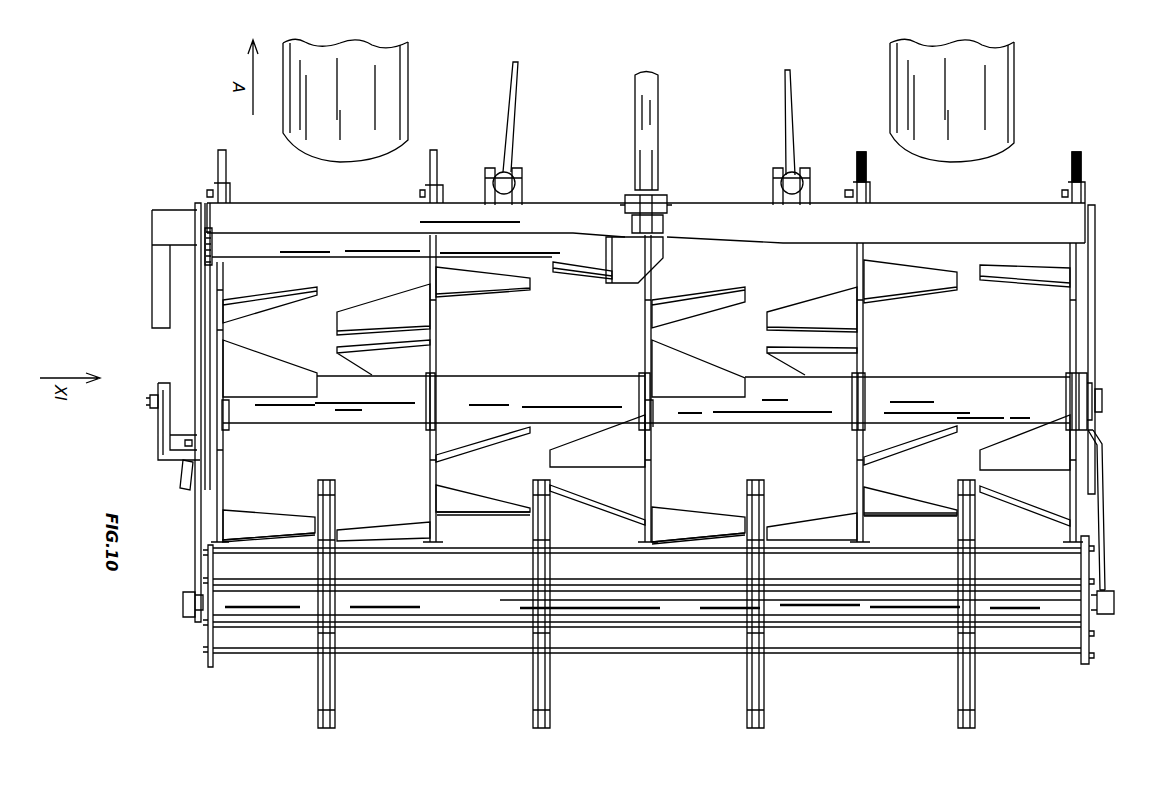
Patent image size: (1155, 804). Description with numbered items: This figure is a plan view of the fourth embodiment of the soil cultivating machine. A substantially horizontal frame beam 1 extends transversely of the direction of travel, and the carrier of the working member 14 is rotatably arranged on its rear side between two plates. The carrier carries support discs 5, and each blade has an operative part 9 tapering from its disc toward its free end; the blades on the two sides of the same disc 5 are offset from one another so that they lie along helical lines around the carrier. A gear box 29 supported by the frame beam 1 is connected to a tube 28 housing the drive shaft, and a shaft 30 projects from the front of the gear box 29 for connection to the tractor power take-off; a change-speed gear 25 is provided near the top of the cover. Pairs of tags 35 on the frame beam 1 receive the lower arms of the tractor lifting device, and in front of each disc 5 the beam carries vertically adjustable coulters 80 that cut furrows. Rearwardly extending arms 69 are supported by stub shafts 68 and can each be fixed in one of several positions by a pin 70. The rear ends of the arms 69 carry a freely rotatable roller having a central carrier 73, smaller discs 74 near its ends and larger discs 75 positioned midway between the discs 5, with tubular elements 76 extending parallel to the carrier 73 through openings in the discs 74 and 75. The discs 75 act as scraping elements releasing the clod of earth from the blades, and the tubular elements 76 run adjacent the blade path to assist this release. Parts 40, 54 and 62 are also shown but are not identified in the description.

The frame beam 1 is at (278, 206).
The support disc 5 is at (280, 297).
The operative part 9 is at (358, 312).
The working member 14 is at (601, 299).
The change-speed gear 25 is at (157, 273).
The tube 28 is at (380, 240).
The gear box 29 is at (660, 253).
The shaft 30 is at (662, 190).
The tags 35 is at (585, 220).
The mounting plate 40 is at (175, 355).
The pivot pin 54 is at (187, 440).
The bearing 62 is at (1097, 307).
The stub shaft 68 is at (150, 400).
The arm 69 is at (195, 570).
The pin 70 is at (180, 478).
The central carrier 73 is at (800, 605).
The support disc 74 is at (210, 667).
The support disc 75 is at (330, 697).
The tubular element 76 is at (618, 630).
The coulter 80 is at (220, 165).